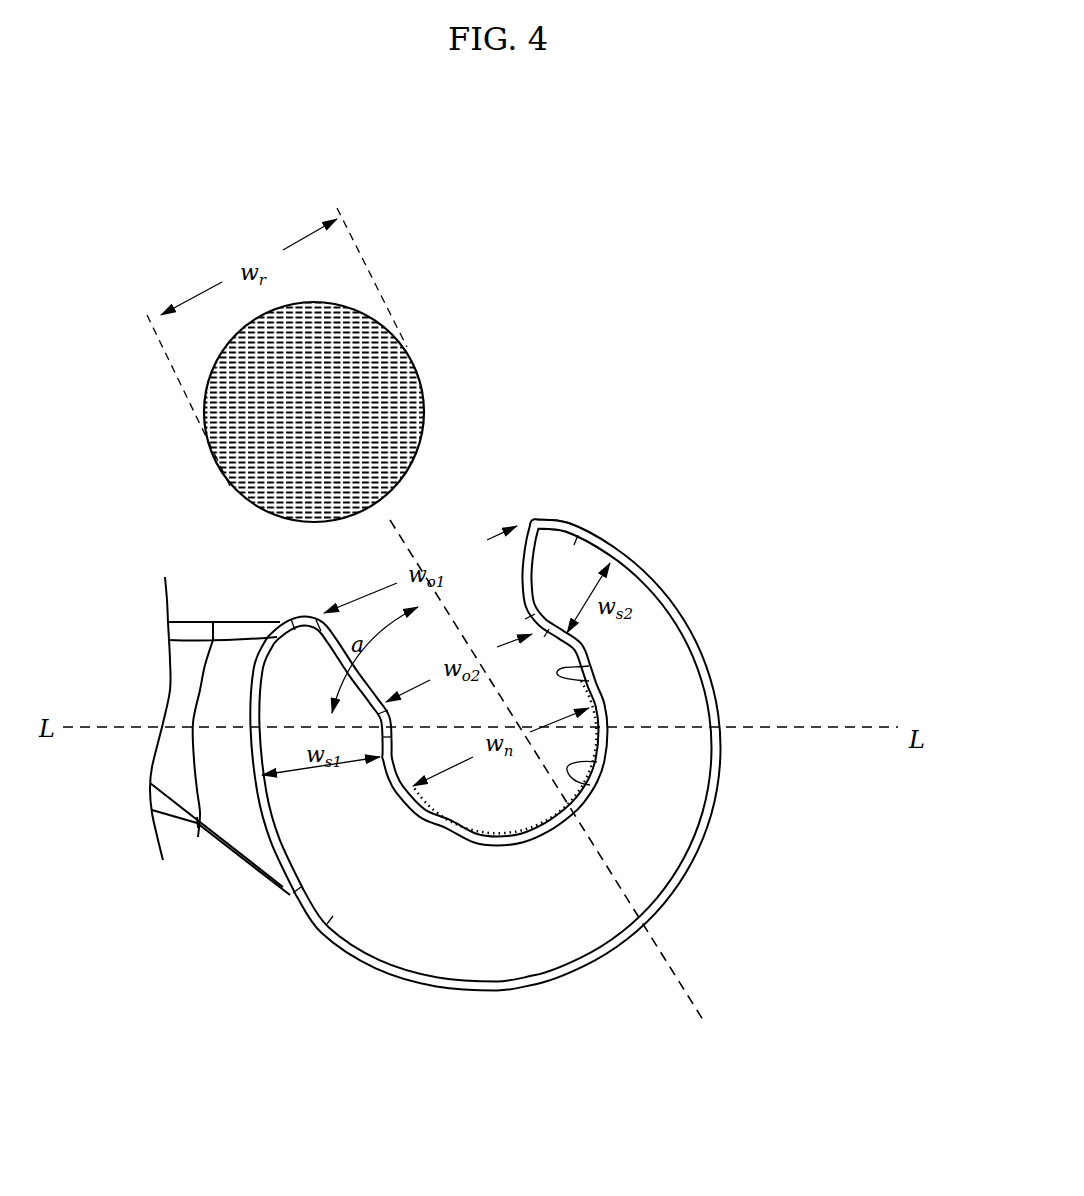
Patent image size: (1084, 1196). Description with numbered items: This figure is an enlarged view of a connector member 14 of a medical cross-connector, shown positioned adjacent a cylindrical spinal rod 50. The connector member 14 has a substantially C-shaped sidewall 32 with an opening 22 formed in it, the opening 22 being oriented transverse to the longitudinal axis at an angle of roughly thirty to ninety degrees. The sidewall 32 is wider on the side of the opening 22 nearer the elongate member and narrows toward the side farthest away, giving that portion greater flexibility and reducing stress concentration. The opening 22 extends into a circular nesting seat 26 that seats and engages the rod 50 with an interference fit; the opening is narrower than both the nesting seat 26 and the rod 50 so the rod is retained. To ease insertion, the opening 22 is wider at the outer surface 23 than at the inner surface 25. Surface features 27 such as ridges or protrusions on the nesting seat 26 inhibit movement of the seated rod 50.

The connector member 14 is at (732, 334).
The opening 22 is at (440, 511).
The outer surface 23 is at (582, 539).
The inner surface 25 is at (560, 673).
The nesting seat 26 is at (493, 800).
The surface features 27 is at (600, 764).
The sidewall 32 is at (653, 643).
The spinal rod 50 is at (430, 351).